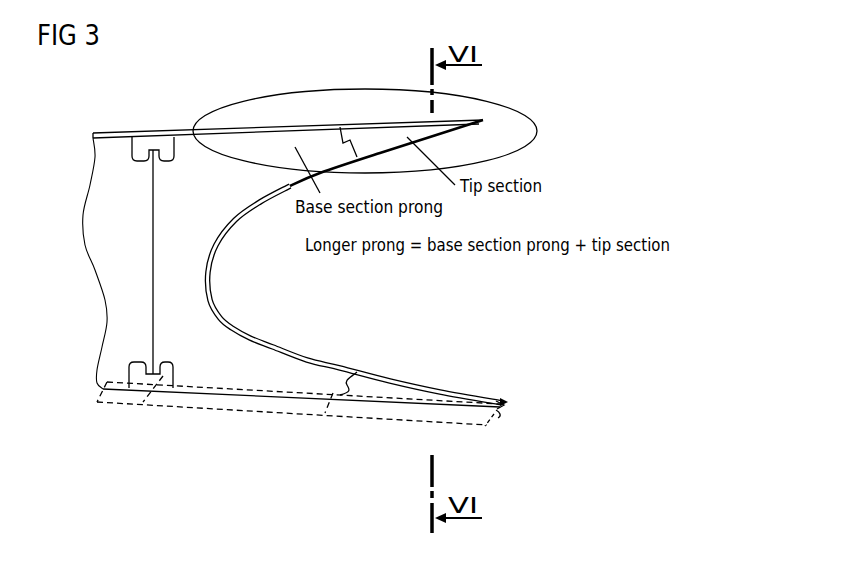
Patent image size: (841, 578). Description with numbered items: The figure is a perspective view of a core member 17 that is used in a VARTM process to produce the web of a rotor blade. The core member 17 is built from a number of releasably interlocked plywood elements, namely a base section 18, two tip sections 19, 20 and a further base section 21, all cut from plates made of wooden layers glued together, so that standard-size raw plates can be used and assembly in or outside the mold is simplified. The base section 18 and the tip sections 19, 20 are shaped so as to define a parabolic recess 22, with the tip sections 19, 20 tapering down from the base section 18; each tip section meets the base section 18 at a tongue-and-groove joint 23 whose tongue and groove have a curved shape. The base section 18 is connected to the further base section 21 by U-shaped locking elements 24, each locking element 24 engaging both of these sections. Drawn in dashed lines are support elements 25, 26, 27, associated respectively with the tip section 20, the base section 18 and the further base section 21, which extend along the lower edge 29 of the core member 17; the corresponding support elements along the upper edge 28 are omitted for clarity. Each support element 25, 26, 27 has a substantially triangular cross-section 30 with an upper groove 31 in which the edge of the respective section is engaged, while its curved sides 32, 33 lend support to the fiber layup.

The core member 17 is at (268, 98).
The base section 18 is at (182, 240).
The tip section 19 is at (380, 128).
The tip section 20 is at (382, 388).
The further base section 21 is at (113, 280).
The parabolic recess 22 is at (216, 298).
The tongue-and-groove joint 23 is at (345, 117).
The locking element 24 is at (168, 138).
The support element 25 is at (347, 414).
The support element 26 is at (192, 404).
The support element 27 is at (117, 398).
The upper edge 28 is at (308, 128).
The lower edge 29 is at (263, 398).
The triangular cross-section 30 is at (502, 414).
The upper groove 31 is at (510, 407).
The curved side 32 is at (491, 420).
The curved side 33 is at (510, 400).